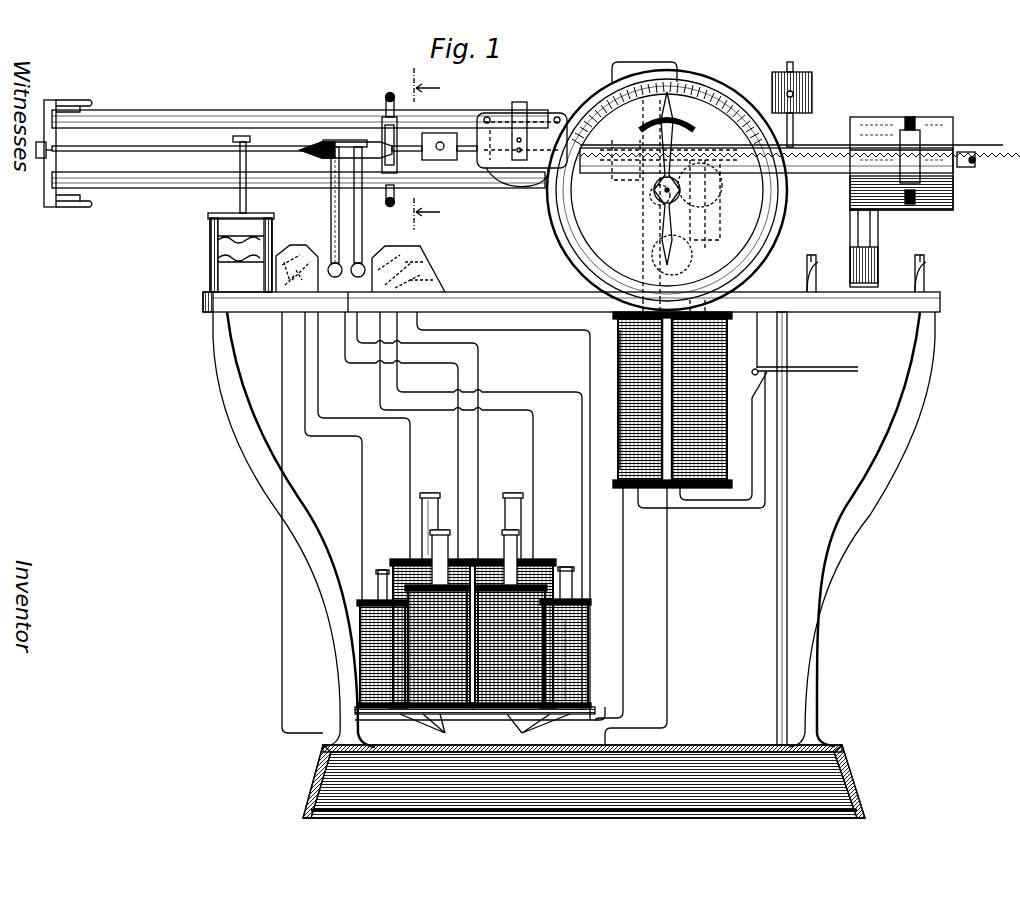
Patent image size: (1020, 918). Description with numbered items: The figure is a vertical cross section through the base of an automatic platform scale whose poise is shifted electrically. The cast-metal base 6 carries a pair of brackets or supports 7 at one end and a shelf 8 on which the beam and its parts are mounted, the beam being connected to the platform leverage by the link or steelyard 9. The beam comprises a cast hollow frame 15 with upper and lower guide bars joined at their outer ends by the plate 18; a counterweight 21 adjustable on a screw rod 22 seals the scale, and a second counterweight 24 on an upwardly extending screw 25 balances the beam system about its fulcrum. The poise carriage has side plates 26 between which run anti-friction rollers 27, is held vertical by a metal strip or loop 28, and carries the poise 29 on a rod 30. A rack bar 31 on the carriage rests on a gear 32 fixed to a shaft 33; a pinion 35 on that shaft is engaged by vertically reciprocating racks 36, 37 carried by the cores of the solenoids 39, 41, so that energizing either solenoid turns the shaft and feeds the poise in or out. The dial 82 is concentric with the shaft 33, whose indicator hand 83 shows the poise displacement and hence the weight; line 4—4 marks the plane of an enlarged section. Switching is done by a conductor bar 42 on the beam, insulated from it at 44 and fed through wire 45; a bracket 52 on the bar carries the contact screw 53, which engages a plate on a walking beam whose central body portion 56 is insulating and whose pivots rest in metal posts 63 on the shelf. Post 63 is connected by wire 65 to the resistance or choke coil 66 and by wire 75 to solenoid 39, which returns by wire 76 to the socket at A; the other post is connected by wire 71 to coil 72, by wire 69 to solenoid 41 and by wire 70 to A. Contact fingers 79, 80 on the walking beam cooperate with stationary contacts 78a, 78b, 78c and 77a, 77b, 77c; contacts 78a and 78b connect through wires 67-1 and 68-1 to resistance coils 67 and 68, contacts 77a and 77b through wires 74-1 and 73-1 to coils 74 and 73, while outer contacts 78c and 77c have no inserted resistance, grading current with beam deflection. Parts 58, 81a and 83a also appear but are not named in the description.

The base 6 is at (858, 760).
The brackets or supports 7 is at (228, 407).
The shelf 8 is at (905, 292).
The link or steelyard 9 is at (140, 192).
The cast hollow frame 15 is at (840, 175).
The plate 18 is at (46, 177).
The counterweight 21 is at (953, 190).
The screw rod 22 is at (975, 162).
The second counterweight 24 is at (814, 84).
The screw 25 is at (794, 66).
The side plates 26 is at (538, 122).
The anti-friction rollers 27 is at (533, 180).
The metal strip or loop 28 is at (519, 102).
The poise 29 is at (440, 131).
The rod 30 is at (463, 152).
The rack bar 31 is at (818, 148).
The gear 32 is at (718, 190).
The shaft 33 is at (650, 200).
The pinion 35 is at (716, 205).
The rack 36 is at (652, 207).
The rack 37 is at (646, 240).
The solenoid 39 is at (718, 396).
The solenoid 41 is at (618, 449).
The conductor bar 42 is at (170, 146).
The insulation point 44 is at (44, 145).
The wire 45 is at (646, 60).
The bracket 52 is at (385, 130).
The contact screw 53 is at (390, 92).
The central body portion 56 is at (361, 140).
The terminal plate 58 is at (523, 716).
The metal post 63 is at (350, 300).
The wire 65 is at (348, 366).
The resistance or choke coil 66 is at (395, 560).
The resistance coil 67 is at (398, 592).
The resistance coil 68 is at (372, 650).
The wire 69 is at (623, 556).
The wire 70 is at (787, 426).
The wire 71 is at (482, 360).
The resistance or choke coil 72 is at (490, 528).
The resistance coil 73 is at (590, 636).
The resistance coil 74 is at (590, 690).
The wire 75 is at (668, 588).
The wire 76 is at (750, 462).
The stationary contact 77a is at (420, 246).
The stationary contact 77b is at (428, 260).
The stationary contact 77c is at (438, 272).
The stationary contact 78a is at (312, 262).
The stationary contact 78b is at (300, 255).
The stationary contact 78c is at (287, 255).
The contact finger 79 is at (331, 213).
The contact finger 80 is at (364, 240).
The wire 81a is at (335, 438).
The dial 82 is at (718, 112).
The indicator hand 83 is at (676, 96).
The wire 83a is at (282, 632).
The wire 67-1 is at (412, 450).
The wire 68-1 is at (364, 482).
The wire 73-1 is at (582, 506).
The wire 74-1 is at (548, 470).
The outlet or connection socket A is at (748, 410).
The section line 4— 4 is at (424, 148).